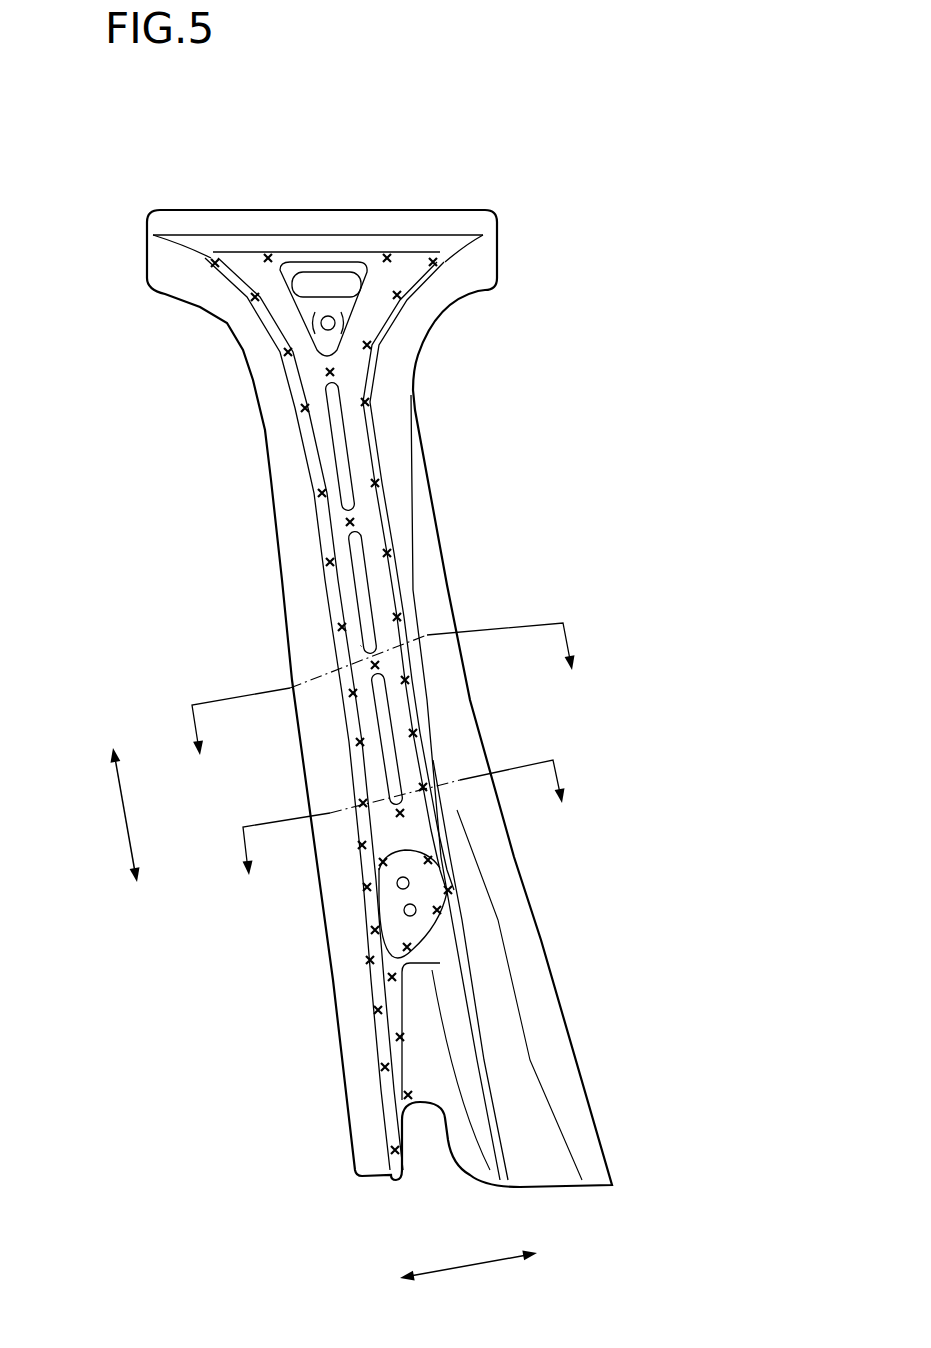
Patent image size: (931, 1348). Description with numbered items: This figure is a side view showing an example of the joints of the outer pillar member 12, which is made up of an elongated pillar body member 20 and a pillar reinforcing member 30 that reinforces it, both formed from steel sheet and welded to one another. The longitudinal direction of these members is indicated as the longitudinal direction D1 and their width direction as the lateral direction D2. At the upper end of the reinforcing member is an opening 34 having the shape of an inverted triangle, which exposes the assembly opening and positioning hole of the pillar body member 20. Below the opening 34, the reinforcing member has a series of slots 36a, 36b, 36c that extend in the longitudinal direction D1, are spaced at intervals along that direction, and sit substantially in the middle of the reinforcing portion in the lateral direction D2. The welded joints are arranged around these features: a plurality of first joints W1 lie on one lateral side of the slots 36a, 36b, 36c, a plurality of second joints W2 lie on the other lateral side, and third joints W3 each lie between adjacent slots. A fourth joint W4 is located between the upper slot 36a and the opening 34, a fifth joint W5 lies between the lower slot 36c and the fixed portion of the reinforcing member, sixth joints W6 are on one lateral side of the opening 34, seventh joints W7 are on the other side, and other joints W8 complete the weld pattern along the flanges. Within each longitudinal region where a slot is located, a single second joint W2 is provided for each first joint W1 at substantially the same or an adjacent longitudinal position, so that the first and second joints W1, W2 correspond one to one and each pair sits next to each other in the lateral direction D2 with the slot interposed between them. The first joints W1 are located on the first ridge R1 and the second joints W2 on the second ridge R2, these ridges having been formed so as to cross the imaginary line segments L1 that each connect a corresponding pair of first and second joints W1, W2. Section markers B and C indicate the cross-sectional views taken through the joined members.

The outer pillar member 12 is at (256, 136).
The pillar body member 20 is at (193, 210).
The pillar reinforcing member 30 is at (250, 252).
The opening 34 is at (380, 290).
The upper slot 36a is at (334, 388).
The slot 36b is at (358, 534).
The lower slot 36c is at (397, 790).
The first joints W1 is at (375, 483).
The second joints W2 is at (320, 493).
The third joints W3 is at (350, 522).
The fourth joint W4 is at (298, 408).
The fifth joint W5 is at (420, 856).
The sixth joints W6 is at (367, 345).
The seventh joints W7 is at (288, 352).
The other joints W8 is at (387, 258).
The imaginary line segments L1 is at (440, 395).
The first ridge R1 is at (400, 620).
The second ridge R2 is at (360, 645).
The longitudinal direction D1 is at (118, 817).
The lateral direction D2 is at (474, 1260).
The section B- B is at (413, 836).
The section C- C is at (392, 706).